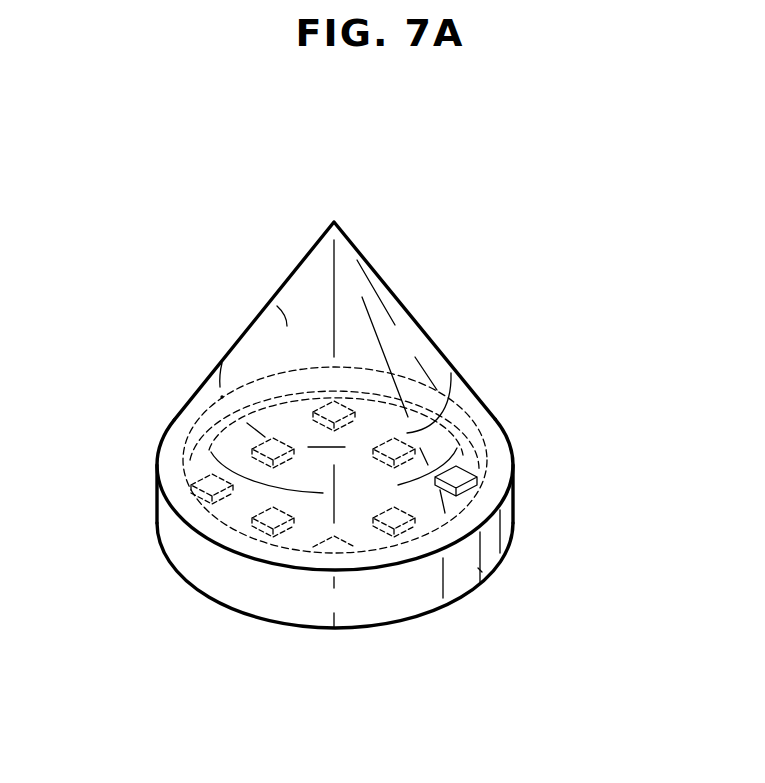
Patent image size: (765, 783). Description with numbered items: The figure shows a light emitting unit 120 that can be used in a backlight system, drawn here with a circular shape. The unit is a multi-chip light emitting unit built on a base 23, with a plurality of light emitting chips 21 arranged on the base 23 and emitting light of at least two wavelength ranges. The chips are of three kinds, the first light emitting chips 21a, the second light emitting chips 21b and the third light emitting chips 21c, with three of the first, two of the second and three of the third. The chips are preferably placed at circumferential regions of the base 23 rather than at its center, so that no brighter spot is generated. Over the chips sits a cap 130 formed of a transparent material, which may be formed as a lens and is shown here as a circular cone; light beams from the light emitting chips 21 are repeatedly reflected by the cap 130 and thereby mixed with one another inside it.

The light emitting unit 120 is at (373, 425).
The cap 130 is at (252, 323).
The base 23 is at (165, 520).
The light emitting chips 21 is at (425, 453).
The first light emitting chips 21a is at (338, 412).
The second light emitting chips 21b is at (388, 440).
The third light emitting chips 21c is at (455, 480).